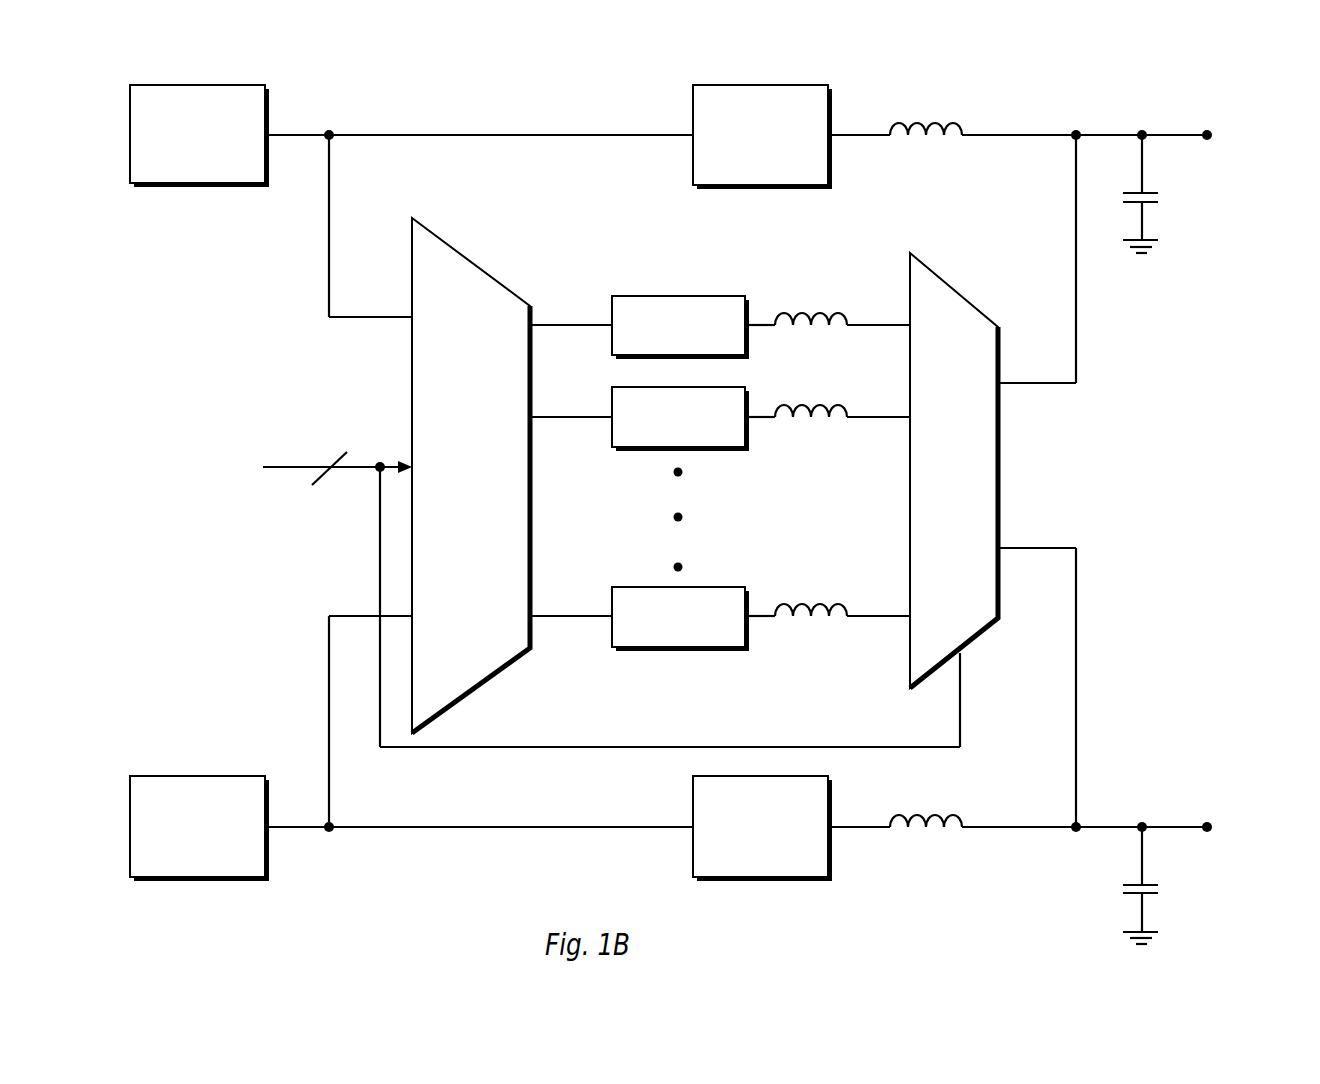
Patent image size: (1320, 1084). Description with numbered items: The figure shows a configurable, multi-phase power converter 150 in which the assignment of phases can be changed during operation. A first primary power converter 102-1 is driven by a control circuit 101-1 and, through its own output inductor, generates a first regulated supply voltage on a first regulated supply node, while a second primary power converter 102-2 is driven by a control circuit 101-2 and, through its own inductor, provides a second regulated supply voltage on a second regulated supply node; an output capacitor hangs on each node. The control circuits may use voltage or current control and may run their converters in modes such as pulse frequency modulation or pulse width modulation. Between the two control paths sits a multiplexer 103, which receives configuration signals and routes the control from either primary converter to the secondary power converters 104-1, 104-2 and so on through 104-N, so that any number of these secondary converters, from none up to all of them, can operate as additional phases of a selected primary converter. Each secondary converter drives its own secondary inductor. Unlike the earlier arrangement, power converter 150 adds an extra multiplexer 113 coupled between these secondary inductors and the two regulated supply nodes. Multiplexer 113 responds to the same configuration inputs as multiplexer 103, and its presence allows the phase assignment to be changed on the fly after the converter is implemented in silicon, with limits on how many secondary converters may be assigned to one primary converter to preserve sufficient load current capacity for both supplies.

The power converter 150 is at (543, 77).
The control circuit 101-1 is at (220, 158).
The control circuit 101-2 is at (220, 852).
The first primary power converter (PPC) 102-1 is at (805, 146).
The second primary power converter (PPC) 102-2 is at (805, 836).
The multiplexer 103 is at (487, 498).
The multiplexer 113 is at (971, 490).
The secondary power converter (SPC) 104-1 is at (722, 336).
The secondary power converter (SPC) 104-2 is at (722, 428).
The secondary power converter (SPC) 104-N is at (725, 626).